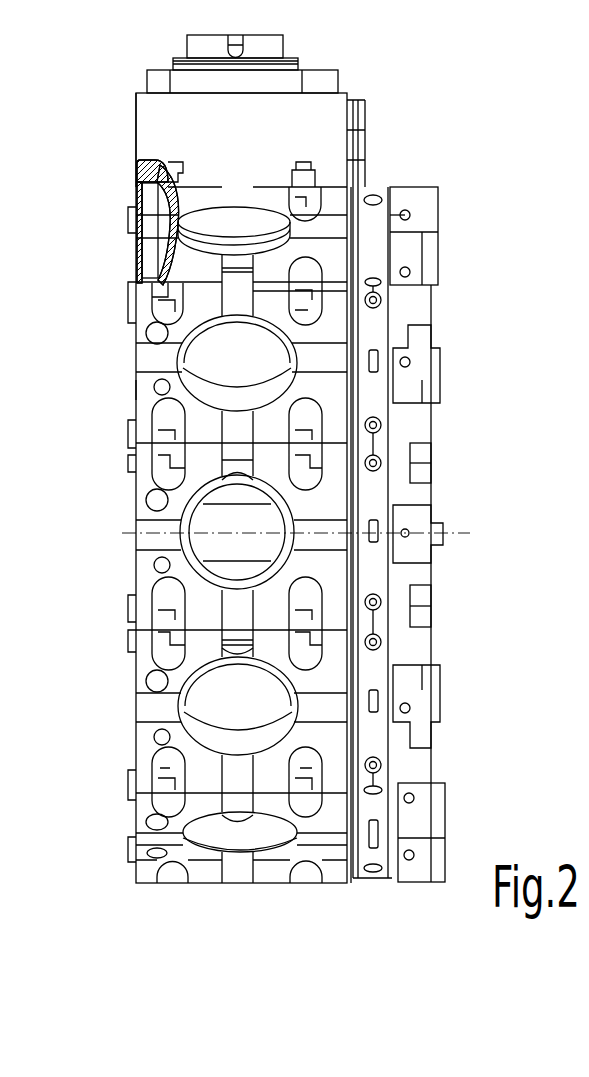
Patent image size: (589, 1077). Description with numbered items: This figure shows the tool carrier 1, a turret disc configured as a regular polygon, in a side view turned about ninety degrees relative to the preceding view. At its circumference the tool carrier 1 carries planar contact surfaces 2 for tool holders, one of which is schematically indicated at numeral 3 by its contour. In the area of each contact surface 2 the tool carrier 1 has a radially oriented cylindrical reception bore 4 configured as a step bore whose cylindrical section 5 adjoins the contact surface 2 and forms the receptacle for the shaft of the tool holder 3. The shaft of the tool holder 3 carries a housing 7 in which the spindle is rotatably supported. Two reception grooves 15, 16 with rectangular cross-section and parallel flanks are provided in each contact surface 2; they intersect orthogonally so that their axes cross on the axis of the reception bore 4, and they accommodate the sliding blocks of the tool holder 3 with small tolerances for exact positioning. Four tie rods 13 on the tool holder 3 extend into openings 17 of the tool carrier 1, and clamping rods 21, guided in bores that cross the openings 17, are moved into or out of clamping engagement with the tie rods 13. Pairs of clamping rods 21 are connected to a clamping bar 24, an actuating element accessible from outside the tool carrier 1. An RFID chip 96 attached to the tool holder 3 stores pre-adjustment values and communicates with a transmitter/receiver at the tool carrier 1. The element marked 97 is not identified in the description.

The tool carrier 1 is at (120, 812).
The contact surface 2 is at (335, 490).
The tool holder 3 is at (363, 66).
The reception bore 4 is at (262, 696).
The cylindrical section 5 is at (258, 340).
The housing 7 is at (148, 122).
The tie rods 13 is at (307, 194).
The reception groove 15 is at (345, 520).
The reception groove 16 is at (190, 477).
The openings 17 is at (160, 407).
The clamping rods 21 is at (135, 462).
The clamping bar 24 is at (0, 388).
The RFID chip 96 is at (137, 174).
The sleeve 97 is at (158, 210).